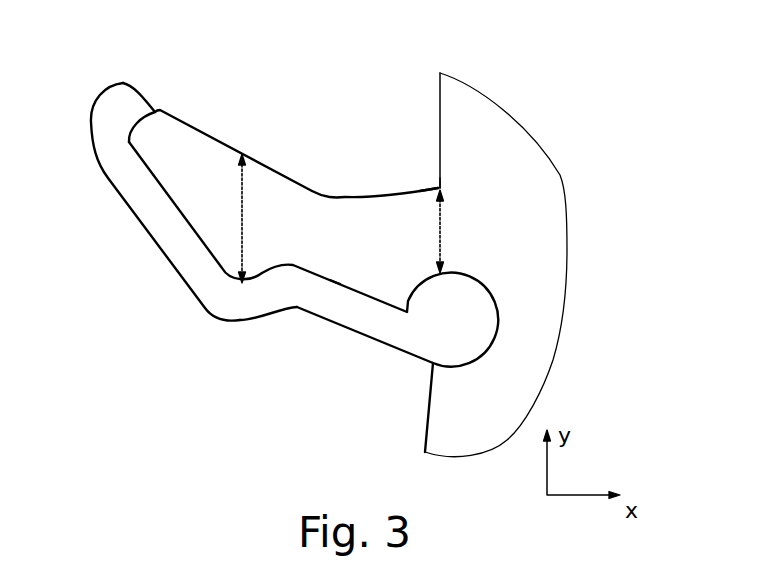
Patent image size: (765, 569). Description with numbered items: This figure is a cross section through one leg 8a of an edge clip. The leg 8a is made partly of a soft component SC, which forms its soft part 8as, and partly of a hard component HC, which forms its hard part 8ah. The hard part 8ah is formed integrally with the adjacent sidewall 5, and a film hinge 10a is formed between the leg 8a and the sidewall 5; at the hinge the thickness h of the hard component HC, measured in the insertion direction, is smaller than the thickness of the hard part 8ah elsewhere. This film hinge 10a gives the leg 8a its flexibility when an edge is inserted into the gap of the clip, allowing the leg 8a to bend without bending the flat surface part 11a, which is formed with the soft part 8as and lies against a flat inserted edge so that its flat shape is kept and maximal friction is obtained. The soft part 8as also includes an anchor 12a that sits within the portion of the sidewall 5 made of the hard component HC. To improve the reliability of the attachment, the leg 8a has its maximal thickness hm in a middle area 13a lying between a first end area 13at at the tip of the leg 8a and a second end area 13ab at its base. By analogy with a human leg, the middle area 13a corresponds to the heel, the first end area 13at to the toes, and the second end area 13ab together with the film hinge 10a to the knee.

The sidewall 5 is at (522, 244).
The leg 8a is at (276, 238).
The hard part 8ah is at (273, 193).
The soft part 8as is at (225, 297).
The film hinge 10a is at (431, 175).
The flat surface part 11a is at (135, 223).
The anchor 12a is at (422, 359).
The middle area 13a is at (246, 293).
The second end area 13ab is at (417, 178).
The first end area 13at is at (155, 105).
The thickness at the position of the film hinge h is at (442, 220).
The maximal thickness hm is at (243, 207).
The hard component HC is at (540, 183).
The soft component SC is at (342, 312).